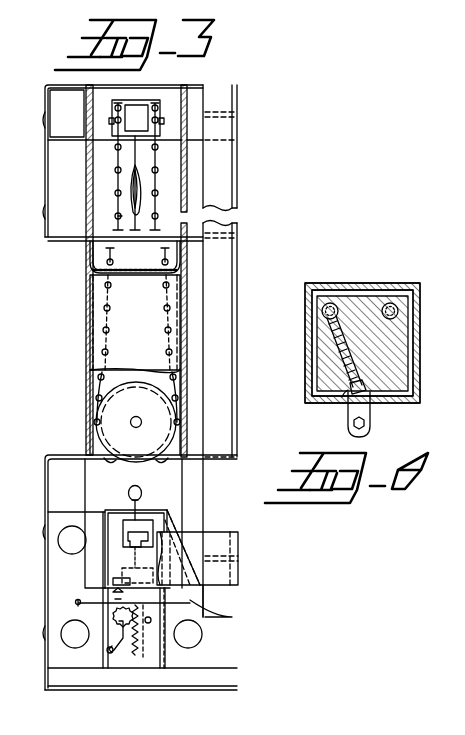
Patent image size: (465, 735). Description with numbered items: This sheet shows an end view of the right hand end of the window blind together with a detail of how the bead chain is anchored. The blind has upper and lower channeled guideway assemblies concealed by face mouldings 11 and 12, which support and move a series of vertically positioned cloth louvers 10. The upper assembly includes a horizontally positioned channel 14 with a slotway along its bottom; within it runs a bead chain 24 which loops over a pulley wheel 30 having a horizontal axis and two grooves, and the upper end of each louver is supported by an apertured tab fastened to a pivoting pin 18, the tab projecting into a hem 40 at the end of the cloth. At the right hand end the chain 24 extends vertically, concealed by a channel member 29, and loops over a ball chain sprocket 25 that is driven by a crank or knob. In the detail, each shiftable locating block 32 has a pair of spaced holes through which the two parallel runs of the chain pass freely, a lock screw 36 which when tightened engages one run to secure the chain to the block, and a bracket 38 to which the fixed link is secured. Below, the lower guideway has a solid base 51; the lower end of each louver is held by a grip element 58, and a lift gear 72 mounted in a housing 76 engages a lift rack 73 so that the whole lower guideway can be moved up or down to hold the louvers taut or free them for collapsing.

In FIG. 3, the louvers 10 is at (118, 217).
In FIG. 3, the face moulding 11 is at (45, 167).
In FIG. 3, the face moulding 12 is at (47, 565).
In FIG. 3, the channel 14 is at (113, 112).
In FIG. 8, the channel 14 is at (347, 285).
In FIG. 3, the pivoting pin 18 is at (118, 156).
In FIG. 3, the bead chain 24 is at (108, 306).
In FIG. 8, the bead chain 24 is at (322, 311).
In FIG. 3, the ball chain sprocket 25 is at (105, 420).
In FIG. 3, the channel member 29 is at (120, 341).
In FIG. 3, the pulley wheel 30 is at (137, 113).
In FIG. 8, the locating block 32 is at (320, 371).
In FIG. 8, the lock screw 36 is at (346, 400).
In FIG. 8, the bracket 38 is at (372, 420).
In FIG. 3, the hem 40 is at (130, 183).
In FIG. 3, the solid base 51 is at (118, 571).
In FIG. 3, the grip element 58 is at (146, 520).
In FIG. 3, the lift gear 72 is at (110, 617).
In FIG. 3, the lift rack 73 is at (140, 660).
In FIG. 3, the housing 76 is at (168, 657).